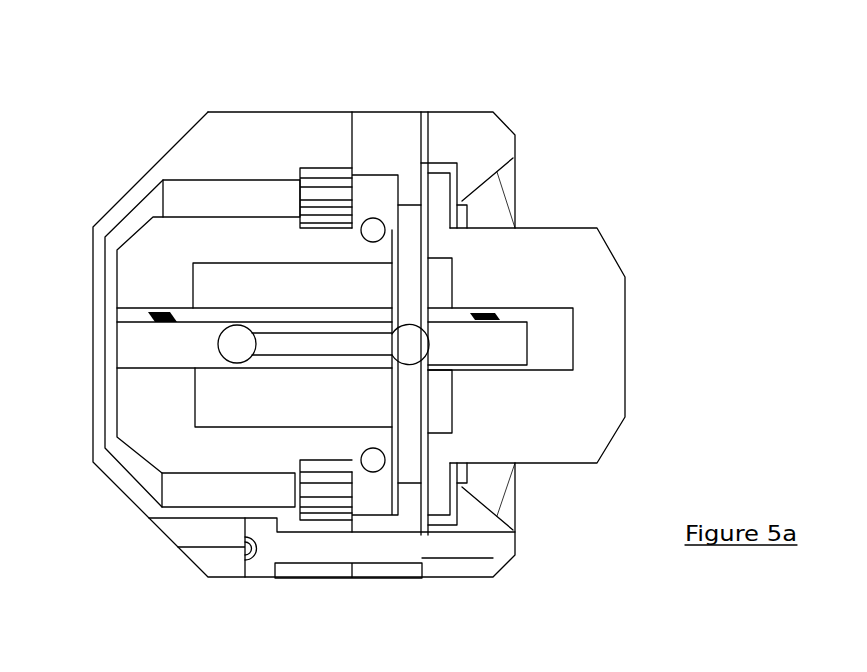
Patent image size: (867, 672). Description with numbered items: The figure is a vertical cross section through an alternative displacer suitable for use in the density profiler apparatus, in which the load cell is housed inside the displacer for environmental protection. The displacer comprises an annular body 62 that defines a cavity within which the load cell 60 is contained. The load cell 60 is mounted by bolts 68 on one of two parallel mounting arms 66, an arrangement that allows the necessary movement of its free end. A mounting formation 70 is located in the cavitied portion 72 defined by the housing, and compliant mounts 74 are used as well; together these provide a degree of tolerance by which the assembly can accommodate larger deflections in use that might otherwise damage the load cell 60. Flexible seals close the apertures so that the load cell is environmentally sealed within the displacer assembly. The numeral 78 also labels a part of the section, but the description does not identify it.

The load cell 60 is at (493, 343).
The annular body 62 is at (223, 128).
The mounting arms 66 is at (163, 428).
The bolts 68 is at (120, 323).
The mounting formation 70 is at (592, 258).
The cavitied portion 72 is at (437, 170).
The compliant mounts 74 is at (308, 168).
The nut 78 is at (498, 190).